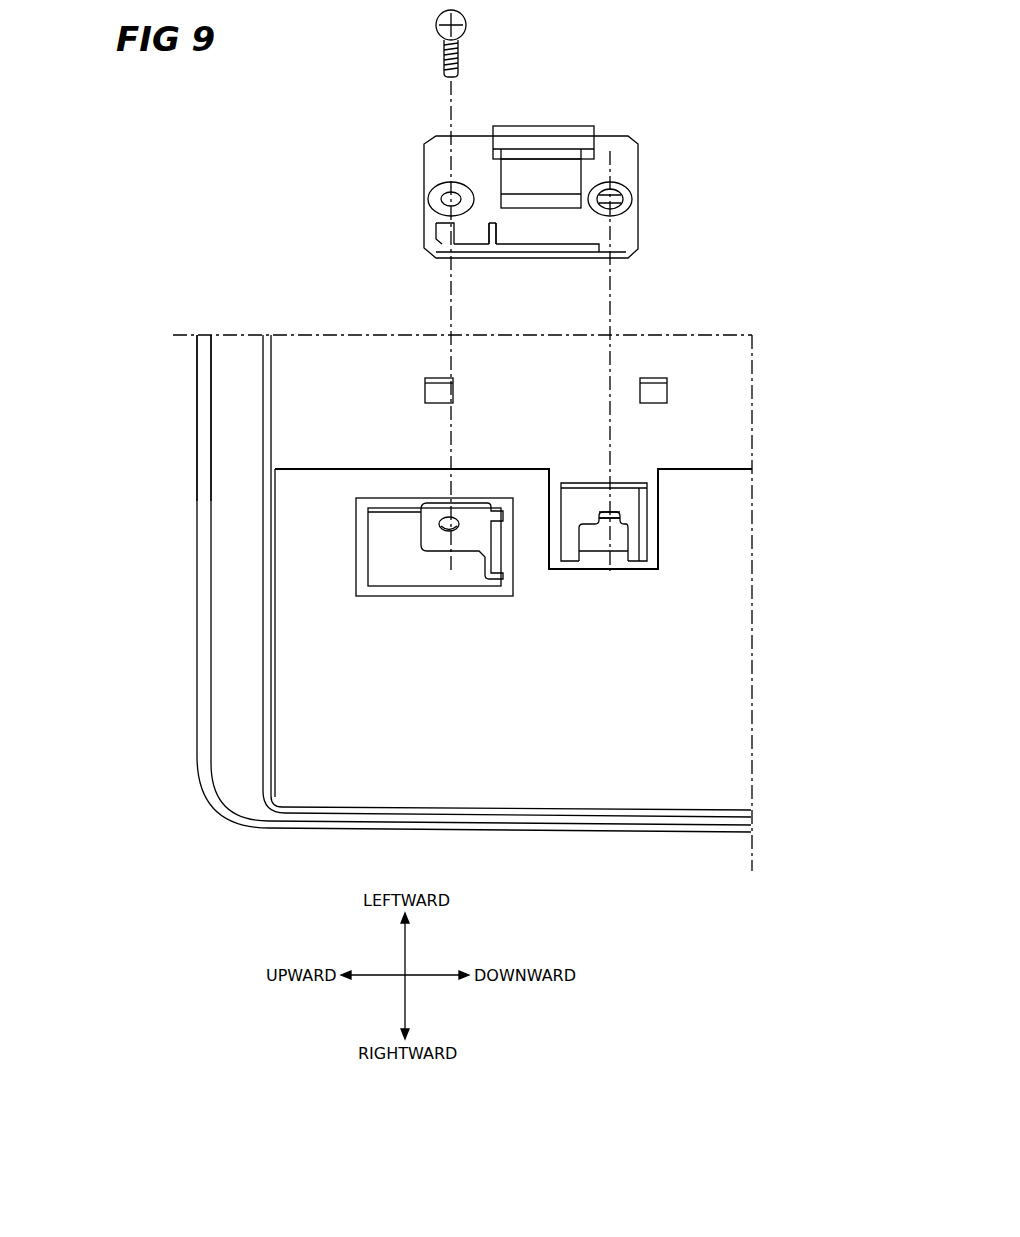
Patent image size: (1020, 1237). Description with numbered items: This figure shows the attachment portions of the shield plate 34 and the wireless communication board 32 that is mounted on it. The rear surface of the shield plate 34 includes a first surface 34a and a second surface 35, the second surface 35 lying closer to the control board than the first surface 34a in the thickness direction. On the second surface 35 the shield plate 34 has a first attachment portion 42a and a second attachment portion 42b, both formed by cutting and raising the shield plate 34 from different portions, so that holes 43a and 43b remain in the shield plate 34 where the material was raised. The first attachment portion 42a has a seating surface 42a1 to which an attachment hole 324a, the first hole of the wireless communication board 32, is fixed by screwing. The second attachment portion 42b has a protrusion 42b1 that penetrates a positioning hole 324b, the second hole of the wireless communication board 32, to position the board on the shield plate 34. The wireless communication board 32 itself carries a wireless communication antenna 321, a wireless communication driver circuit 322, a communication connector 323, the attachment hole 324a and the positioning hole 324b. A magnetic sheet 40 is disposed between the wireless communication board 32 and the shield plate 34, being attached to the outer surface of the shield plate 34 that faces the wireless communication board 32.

The wireless communication board 32 is at (435, 148).
The wireless communication antenna 321 is at (495, 232).
The wireless communication driver circuit 322 is at (558, 165).
The communication connector 323 is at (530, 135).
The attachment hole 324a is at (442, 190).
The positioning hole 324b is at (620, 195).
The shield plate 34 is at (235, 425).
The first surface 34a is at (233, 360).
The second surface 35 is at (336, 418).
The magnetic sheet 40 is at (295, 565).
The first attachment portion 42a is at (478, 565).
The seating surface 42a1 is at (446, 530).
The second attachment portion 42b is at (592, 545).
The protrusion 42b1 is at (619, 506).
The hole 43a is at (367, 572).
The hole 43b is at (638, 562).